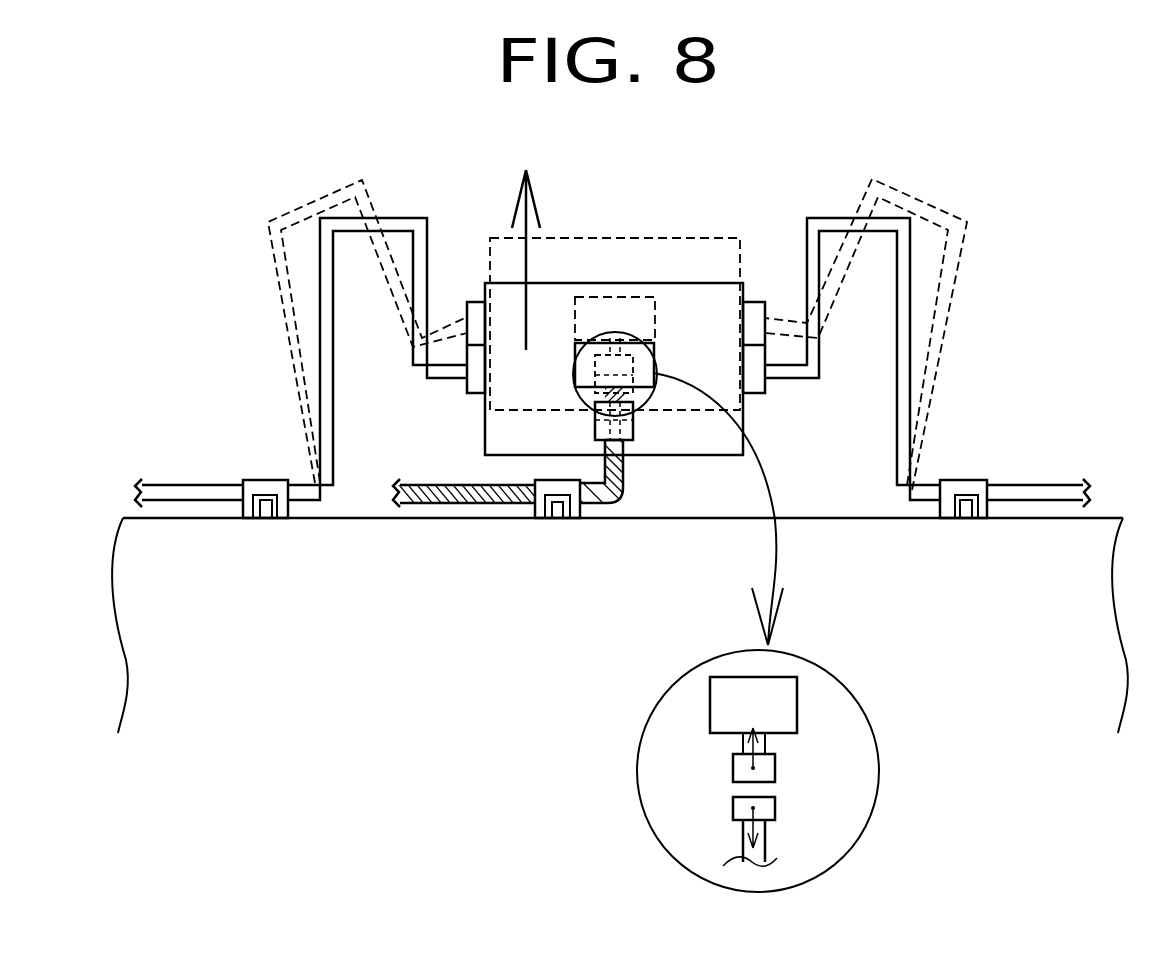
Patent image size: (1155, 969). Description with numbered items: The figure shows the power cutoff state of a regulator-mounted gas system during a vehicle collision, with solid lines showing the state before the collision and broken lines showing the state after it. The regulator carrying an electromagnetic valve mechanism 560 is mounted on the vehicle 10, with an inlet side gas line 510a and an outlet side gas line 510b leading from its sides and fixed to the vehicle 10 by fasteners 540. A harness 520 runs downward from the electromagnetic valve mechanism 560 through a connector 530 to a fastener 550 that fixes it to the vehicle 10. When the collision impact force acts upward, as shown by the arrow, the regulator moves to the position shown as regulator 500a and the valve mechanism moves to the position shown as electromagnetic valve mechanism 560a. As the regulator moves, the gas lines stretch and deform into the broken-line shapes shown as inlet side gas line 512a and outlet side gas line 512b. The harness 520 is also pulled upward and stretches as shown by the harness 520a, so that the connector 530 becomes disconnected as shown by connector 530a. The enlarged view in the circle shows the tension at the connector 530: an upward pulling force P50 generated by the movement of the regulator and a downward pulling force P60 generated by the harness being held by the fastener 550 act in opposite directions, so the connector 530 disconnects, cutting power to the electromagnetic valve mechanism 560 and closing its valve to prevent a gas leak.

The vehicle 10 is at (1043, 574).
The regulator (moved position) 500a is at (703, 238).
The inlet side gas line 510a is at (897, 420).
The outlet side gas line 510b is at (398, 217).
The inlet side gas line (deformed) 512a is at (923, 202).
The outlet side gas line (deformed) 512b is at (308, 203).
The harness 520 is at (625, 480).
The harness (stretched) 520a is at (595, 423).
The connector 530 is at (635, 427).
The connector (disconnected) 530a is at (635, 368).
The fastener 540 is at (240, 508).
The fastener 550 is at (535, 512).
The electromagnetic valve mechanism 560 is at (573, 367).
The electromagnetic valve mechanism (moved position) 560a is at (608, 295).
The upward pulling force P50 is at (753, 762).
The downward pulling force P60 is at (753, 813).